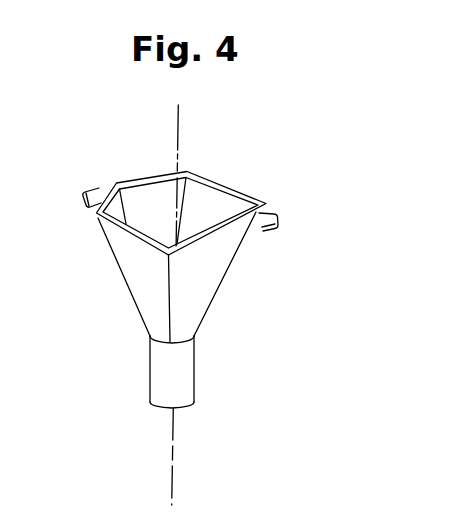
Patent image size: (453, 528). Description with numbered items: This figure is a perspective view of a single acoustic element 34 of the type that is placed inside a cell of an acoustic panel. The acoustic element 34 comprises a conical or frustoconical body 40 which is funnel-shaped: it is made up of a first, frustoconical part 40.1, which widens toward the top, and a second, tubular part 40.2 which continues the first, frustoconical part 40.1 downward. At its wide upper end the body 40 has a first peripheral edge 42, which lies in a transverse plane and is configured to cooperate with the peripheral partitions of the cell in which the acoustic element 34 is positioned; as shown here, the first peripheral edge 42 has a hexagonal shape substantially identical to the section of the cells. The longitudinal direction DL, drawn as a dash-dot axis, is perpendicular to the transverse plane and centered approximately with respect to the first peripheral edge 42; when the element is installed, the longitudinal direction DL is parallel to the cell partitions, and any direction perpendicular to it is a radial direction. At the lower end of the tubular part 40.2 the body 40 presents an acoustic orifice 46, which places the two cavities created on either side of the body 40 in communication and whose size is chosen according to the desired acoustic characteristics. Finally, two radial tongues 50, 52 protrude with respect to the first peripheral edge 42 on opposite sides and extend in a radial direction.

The acoustic element 34 is at (124, 322).
The body 40 is at (225, 288).
The first, frustoconical part 40.1 is at (141, 261).
The second, tubular part 40.2 is at (157, 370).
The first peripheral edge 42 is at (157, 172).
The acoustic orifice 46 is at (182, 408).
The radial tongue 50 is at (91, 191).
The radial tongue 52 is at (273, 213).
The longitudinal direction DL is at (178, 142).